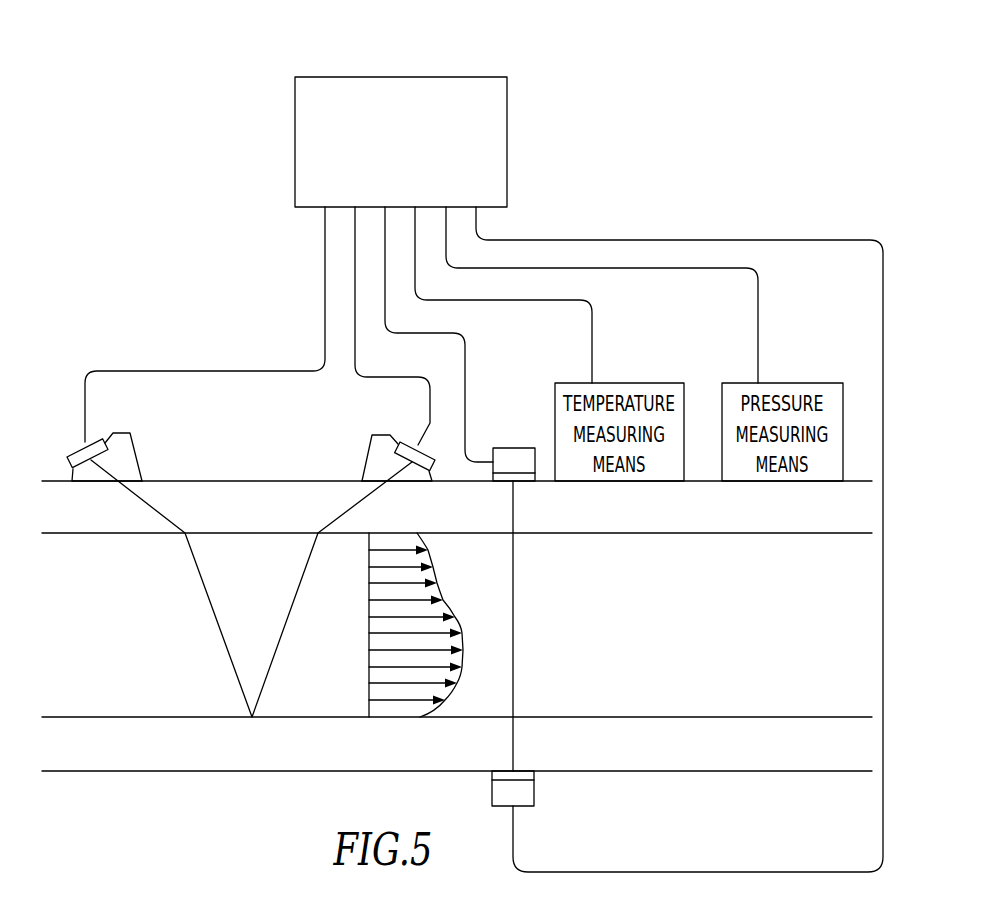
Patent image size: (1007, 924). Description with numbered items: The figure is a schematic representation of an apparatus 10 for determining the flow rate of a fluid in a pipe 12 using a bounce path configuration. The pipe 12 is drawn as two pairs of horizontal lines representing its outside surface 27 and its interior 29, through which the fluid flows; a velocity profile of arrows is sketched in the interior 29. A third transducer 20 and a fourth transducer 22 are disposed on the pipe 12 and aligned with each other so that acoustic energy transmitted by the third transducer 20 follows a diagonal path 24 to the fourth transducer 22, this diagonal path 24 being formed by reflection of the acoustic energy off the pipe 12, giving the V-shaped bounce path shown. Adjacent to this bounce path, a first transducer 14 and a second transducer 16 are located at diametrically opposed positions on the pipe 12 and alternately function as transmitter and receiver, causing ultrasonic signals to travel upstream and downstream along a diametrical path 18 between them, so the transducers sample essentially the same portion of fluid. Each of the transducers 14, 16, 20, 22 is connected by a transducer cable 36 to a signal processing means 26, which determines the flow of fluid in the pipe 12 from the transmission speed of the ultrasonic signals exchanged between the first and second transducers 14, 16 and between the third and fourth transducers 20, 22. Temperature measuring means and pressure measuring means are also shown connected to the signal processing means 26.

The apparatus 10 is at (150, 208).
The pipe 12 is at (457, 645).
The first transducer 14 is at (510, 448).
The second transducer 16 is at (550, 810).
The diametrical path 18 is at (514, 682).
The third transducer 20 is at (69, 457).
The fourth transducer 22 is at (387, 433).
The diagonal path 24 is at (217, 623).
The signal processing means 26 is at (401, 110).
The outside surface 27 is at (287, 772).
The interior 29 is at (696, 647).
The transducer cable 36 is at (242, 371).